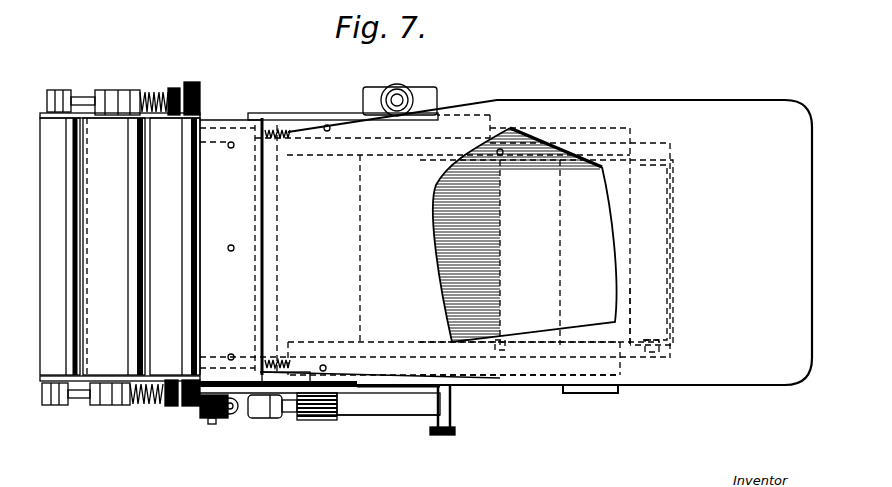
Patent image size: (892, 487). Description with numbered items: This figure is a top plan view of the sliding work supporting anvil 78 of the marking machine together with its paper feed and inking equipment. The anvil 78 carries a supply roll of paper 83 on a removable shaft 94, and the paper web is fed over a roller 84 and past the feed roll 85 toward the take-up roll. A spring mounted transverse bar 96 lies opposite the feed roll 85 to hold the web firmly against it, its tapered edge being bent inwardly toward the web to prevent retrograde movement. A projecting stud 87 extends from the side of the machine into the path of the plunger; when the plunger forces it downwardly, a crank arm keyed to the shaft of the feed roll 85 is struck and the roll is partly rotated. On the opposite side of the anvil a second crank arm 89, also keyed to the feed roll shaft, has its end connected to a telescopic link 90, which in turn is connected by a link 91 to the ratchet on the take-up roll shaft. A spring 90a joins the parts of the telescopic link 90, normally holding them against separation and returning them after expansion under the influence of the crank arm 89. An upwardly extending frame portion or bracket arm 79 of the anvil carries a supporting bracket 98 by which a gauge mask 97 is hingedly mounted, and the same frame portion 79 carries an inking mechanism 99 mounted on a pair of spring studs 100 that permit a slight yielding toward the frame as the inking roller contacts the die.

The work supporting anvil 78 is at (521, 380).
The frame portion or bracket arm 79 is at (134, 402).
The supply roll of paper 83 is at (582, 396).
The roller 84 is at (673, 258).
The feed roll 85 is at (322, 172).
The projecting stud 87 is at (407, 100).
The second crank arm 89 is at (291, 421).
The telescopic link 90 is at (255, 420).
The spring 90a is at (231, 418).
The link 91 is at (300, 400).
The shaft of the supply roll 94 is at (521, 236).
The spring mounted transverse bar 96 is at (275, 158).
The gauge mask 97 is at (696, 385).
The supporting bracket 98 is at (184, 408).
The inking mechanism 99 is at (120, 246).
The spring studs 100 is at (140, 104).